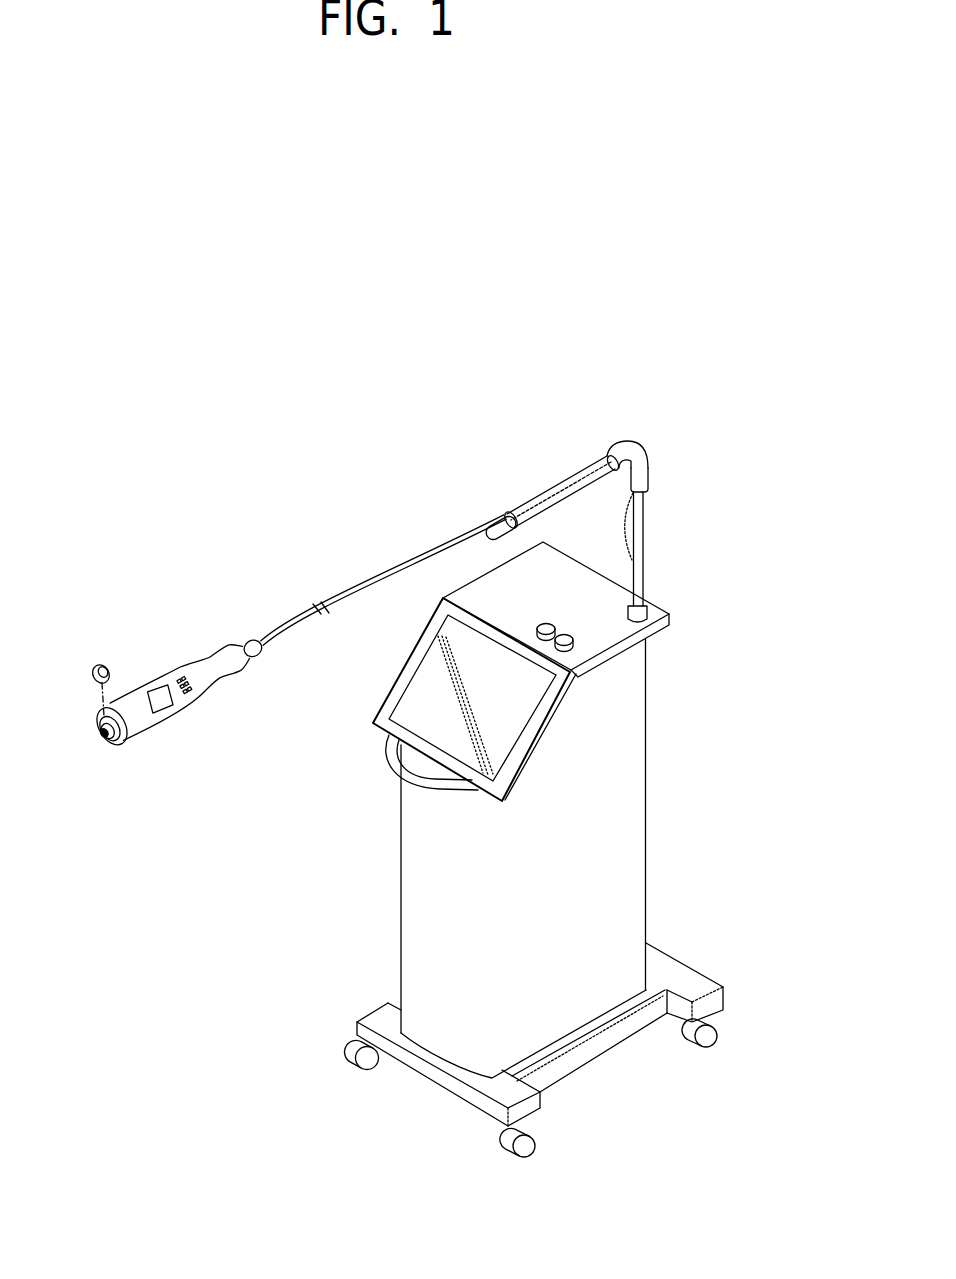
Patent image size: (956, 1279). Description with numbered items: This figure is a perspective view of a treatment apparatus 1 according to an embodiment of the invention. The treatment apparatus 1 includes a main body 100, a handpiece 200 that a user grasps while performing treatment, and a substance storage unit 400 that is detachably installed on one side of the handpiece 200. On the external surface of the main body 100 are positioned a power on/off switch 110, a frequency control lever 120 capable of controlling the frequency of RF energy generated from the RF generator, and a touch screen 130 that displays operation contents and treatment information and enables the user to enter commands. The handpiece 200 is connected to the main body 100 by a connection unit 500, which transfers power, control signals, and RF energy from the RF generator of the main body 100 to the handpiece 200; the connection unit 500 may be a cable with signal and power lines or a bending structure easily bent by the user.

The treatment apparatus 1 is at (211, 436).
The main body 100 is at (659, 778).
The power on/off switch 110 is at (567, 636).
The frequency control lever 120 is at (552, 626).
The touch screen 130 is at (420, 711).
The handpiece 200 is at (165, 752).
The substance storage unit 400 is at (102, 663).
The connection unit 500 is at (345, 562).